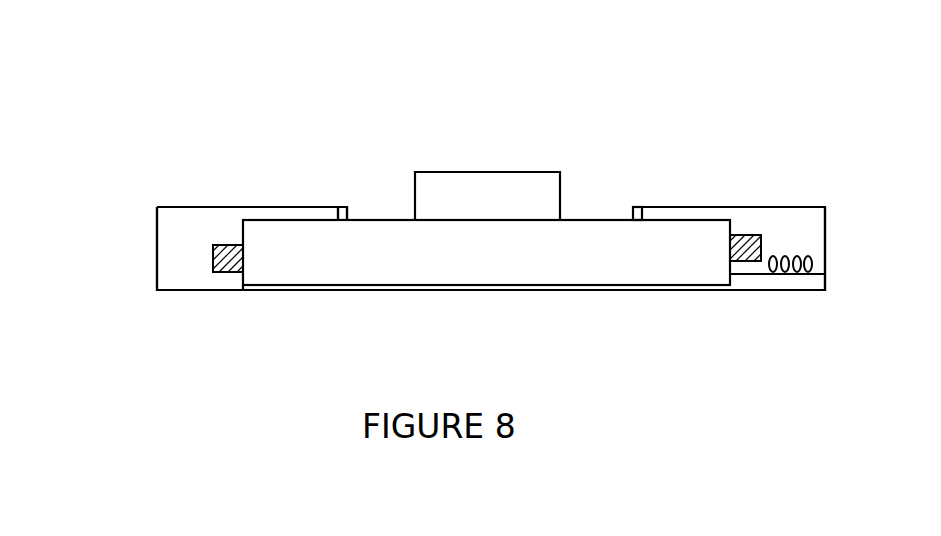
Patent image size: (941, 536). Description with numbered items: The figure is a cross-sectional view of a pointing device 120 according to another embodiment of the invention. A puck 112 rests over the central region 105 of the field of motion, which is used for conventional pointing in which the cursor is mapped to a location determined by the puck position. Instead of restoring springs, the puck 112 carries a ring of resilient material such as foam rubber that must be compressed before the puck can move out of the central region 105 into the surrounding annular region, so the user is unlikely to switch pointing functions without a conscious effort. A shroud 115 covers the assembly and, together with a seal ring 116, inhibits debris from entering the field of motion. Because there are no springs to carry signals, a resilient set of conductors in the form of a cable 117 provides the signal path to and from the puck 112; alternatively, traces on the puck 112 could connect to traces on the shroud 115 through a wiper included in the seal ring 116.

The pointing device 120 is at (170, 127).
The region 105 is at (777, 302).
The puck 112 is at (468, 170).
The shroud 115 is at (292, 206).
The seal ring 116 is at (630, 205).
The cable 117 is at (807, 255).